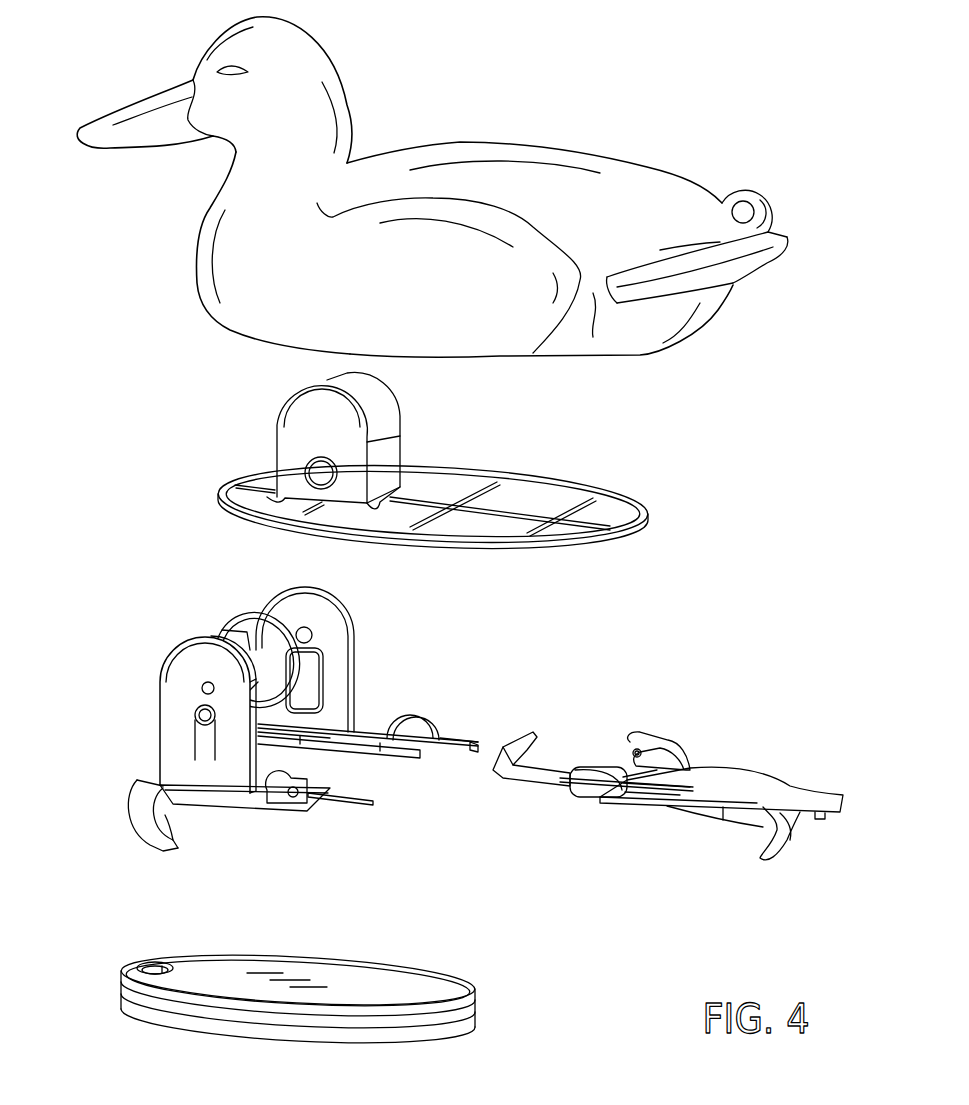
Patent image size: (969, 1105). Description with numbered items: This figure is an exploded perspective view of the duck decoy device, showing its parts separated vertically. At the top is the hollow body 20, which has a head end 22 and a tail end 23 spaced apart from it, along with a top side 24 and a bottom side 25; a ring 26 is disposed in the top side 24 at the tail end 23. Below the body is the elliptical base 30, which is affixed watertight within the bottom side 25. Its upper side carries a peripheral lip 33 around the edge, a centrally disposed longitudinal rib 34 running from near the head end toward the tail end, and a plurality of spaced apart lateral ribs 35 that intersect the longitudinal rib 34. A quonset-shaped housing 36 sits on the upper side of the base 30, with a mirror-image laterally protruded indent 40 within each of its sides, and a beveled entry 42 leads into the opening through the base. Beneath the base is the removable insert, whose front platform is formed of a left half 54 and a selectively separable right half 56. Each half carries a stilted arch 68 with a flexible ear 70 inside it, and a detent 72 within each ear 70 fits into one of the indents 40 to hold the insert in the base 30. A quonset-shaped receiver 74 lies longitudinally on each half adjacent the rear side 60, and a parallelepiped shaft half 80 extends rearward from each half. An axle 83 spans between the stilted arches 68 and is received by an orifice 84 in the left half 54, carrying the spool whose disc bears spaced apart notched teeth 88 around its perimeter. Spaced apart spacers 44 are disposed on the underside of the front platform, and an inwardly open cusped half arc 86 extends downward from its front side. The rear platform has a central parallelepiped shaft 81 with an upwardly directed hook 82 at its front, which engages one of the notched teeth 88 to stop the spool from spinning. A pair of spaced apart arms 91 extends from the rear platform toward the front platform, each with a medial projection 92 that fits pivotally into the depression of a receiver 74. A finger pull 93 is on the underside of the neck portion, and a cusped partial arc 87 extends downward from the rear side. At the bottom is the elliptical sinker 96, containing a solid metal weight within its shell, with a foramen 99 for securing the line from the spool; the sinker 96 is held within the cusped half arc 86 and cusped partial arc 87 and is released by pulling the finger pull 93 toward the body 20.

The hollow body 20 is at (533, 247).
The head end 22 is at (196, 240).
The tail end 23 is at (757, 277).
The top side 24 is at (497, 137).
The bottom side 25 is at (523, 355).
The ring 26 is at (750, 195).
The elliptical base 30 is at (423, 485).
The peripheral lip 33 is at (635, 520).
The longitudinal rib 34 is at (517, 512).
The lateral ribs 35 is at (570, 503).
The quonset-shaped housing 36 is at (352, 440).
The laterally protruded indent 40 is at (321, 473).
The beveled entry 42 is at (140, 782).
The spacers 44 is at (377, 760).
The left half 54 is at (268, 805).
The right half 56 is at (370, 732).
The rear side 60 is at (312, 812).
The stilted arch 68 is at (158, 700).
The flexible ear 70 is at (312, 680).
The detent 72 is at (195, 715).
The quonset-shaped receiver 74 is at (423, 713).
The parallelepiped shaft half 80 is at (465, 747).
The parallelepiped shaft 81 is at (572, 770).
The hook 82 is at (528, 738).
The axle 83 is at (310, 633).
The orifice 84 is at (203, 685).
The cusped half arc 86 is at (174, 822).
The cusped partial arc 87 is at (705, 841).
The notched teeth 88 is at (240, 636).
The arms 91 is at (676, 735).
The projection 92 is at (638, 750).
The finger pull 93 is at (822, 819).
The elliptical sinker 96 is at (298, 992).
The foramen 99 is at (153, 962).